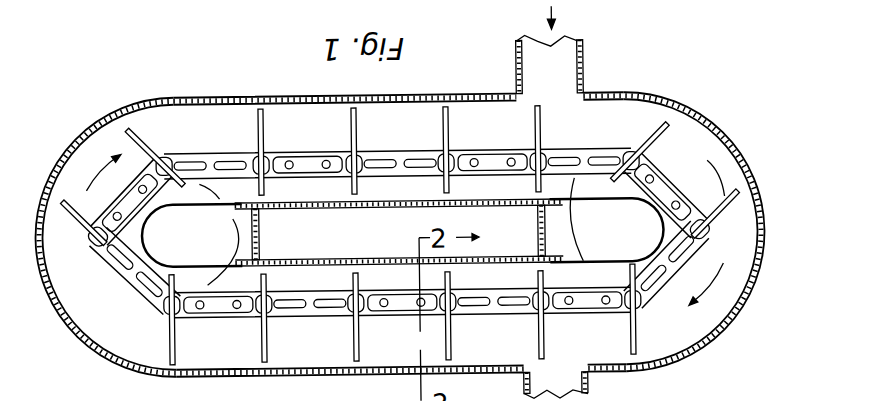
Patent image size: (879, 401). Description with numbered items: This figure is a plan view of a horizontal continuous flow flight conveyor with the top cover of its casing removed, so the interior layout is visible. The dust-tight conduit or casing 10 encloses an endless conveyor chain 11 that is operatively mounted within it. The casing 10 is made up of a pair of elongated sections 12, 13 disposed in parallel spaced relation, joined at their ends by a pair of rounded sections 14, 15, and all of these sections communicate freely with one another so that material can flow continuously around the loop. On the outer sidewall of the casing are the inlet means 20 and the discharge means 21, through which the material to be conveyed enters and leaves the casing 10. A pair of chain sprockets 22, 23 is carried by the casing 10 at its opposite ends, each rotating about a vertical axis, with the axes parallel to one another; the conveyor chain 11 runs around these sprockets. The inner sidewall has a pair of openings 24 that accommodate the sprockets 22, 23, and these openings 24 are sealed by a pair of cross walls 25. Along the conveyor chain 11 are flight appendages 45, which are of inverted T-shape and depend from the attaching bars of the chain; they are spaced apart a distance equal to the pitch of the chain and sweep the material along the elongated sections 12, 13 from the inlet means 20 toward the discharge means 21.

The casing 10 is at (712, 318).
The conveyor chain 11 is at (377, 154).
The elongated section 12 is at (332, 265).
The elongated section 13 is at (317, 200).
The rounded section 14 is at (63, 305).
The rounded section 15 is at (761, 245).
The inlet means 20 is at (563, 58).
The discharge means 21 is at (565, 380).
The chain sprocket 22 is at (236, 222).
The chain sprocket 23 is at (568, 222).
The opening 24 is at (164, 261).
The cross wall 25 is at (262, 234).
The flight appendage 45 is at (663, 138).